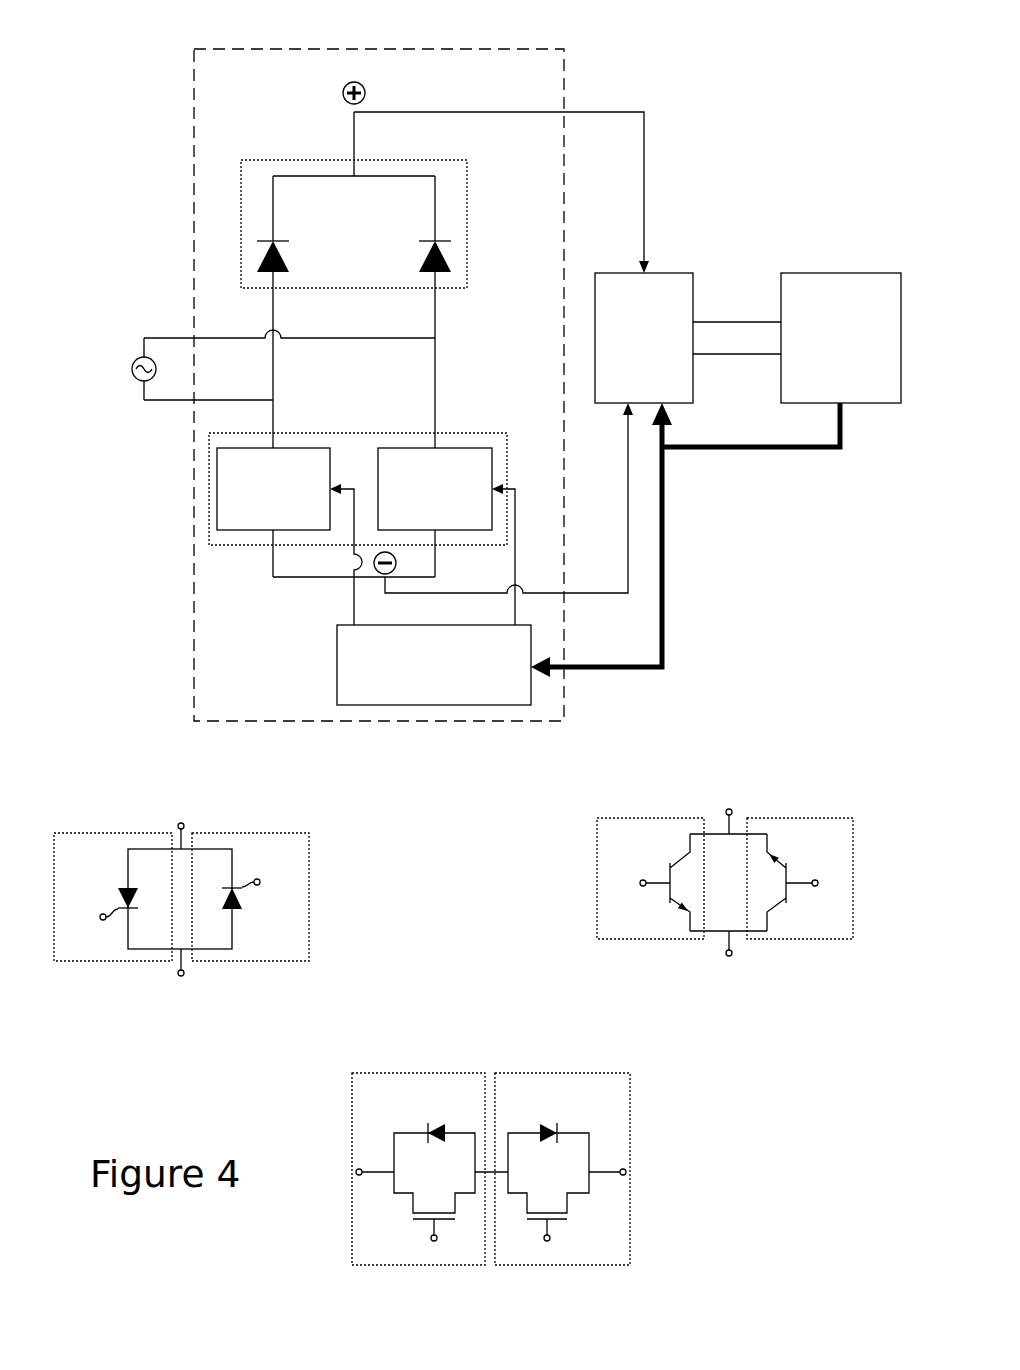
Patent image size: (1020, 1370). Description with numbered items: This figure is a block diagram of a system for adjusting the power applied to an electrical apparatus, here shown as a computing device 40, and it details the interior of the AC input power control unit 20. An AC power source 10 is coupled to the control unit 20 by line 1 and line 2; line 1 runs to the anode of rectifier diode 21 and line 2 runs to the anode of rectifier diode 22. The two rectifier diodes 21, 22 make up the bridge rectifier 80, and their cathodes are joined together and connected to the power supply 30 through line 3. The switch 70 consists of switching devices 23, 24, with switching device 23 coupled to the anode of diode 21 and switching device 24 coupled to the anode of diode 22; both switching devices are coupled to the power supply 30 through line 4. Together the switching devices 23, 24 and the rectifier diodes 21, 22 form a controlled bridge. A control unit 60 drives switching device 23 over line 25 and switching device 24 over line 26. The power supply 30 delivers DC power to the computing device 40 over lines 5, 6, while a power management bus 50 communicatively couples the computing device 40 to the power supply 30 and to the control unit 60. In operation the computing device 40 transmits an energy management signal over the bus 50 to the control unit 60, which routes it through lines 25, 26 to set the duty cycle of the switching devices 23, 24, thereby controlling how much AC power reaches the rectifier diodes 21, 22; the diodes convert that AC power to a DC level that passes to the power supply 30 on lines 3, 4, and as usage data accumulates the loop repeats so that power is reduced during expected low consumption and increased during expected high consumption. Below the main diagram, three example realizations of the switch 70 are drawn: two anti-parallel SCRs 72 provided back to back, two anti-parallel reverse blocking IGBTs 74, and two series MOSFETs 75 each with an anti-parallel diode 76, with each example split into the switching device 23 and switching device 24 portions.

The line 1 is at (178, 338).
The line 2 is at (178, 400).
The line 3 is at (435, 112).
The line 4 is at (628, 505).
The line 5 is at (710, 322).
The line 6 is at (710, 354).
The AC power source 10 is at (140, 357).
The AC input power control unit 20 is at (500, 49).
The rectifier diode 21 is at (280, 240).
The rectifier diode 22 is at (425, 240).
The switching device 23 is at (97, 833).
The switching device 24 is at (281, 833).
The line 25 is at (352, 608).
The line 26 is at (515, 497).
The power supply 30 is at (644, 338).
The computing device 40 is at (841, 338).
The power management bus 50 is at (725, 450).
The control unit 60 is at (434, 665).
The switch 70 is at (380, 433).
The SCR 72 is at (128, 886).
The reverse blocking IGBT 74 is at (680, 862).
The MOSFET 75 is at (427, 1222).
The anti-parallel diode 76 is at (438, 1123).
The bridge rectifier 80 is at (333, 160).